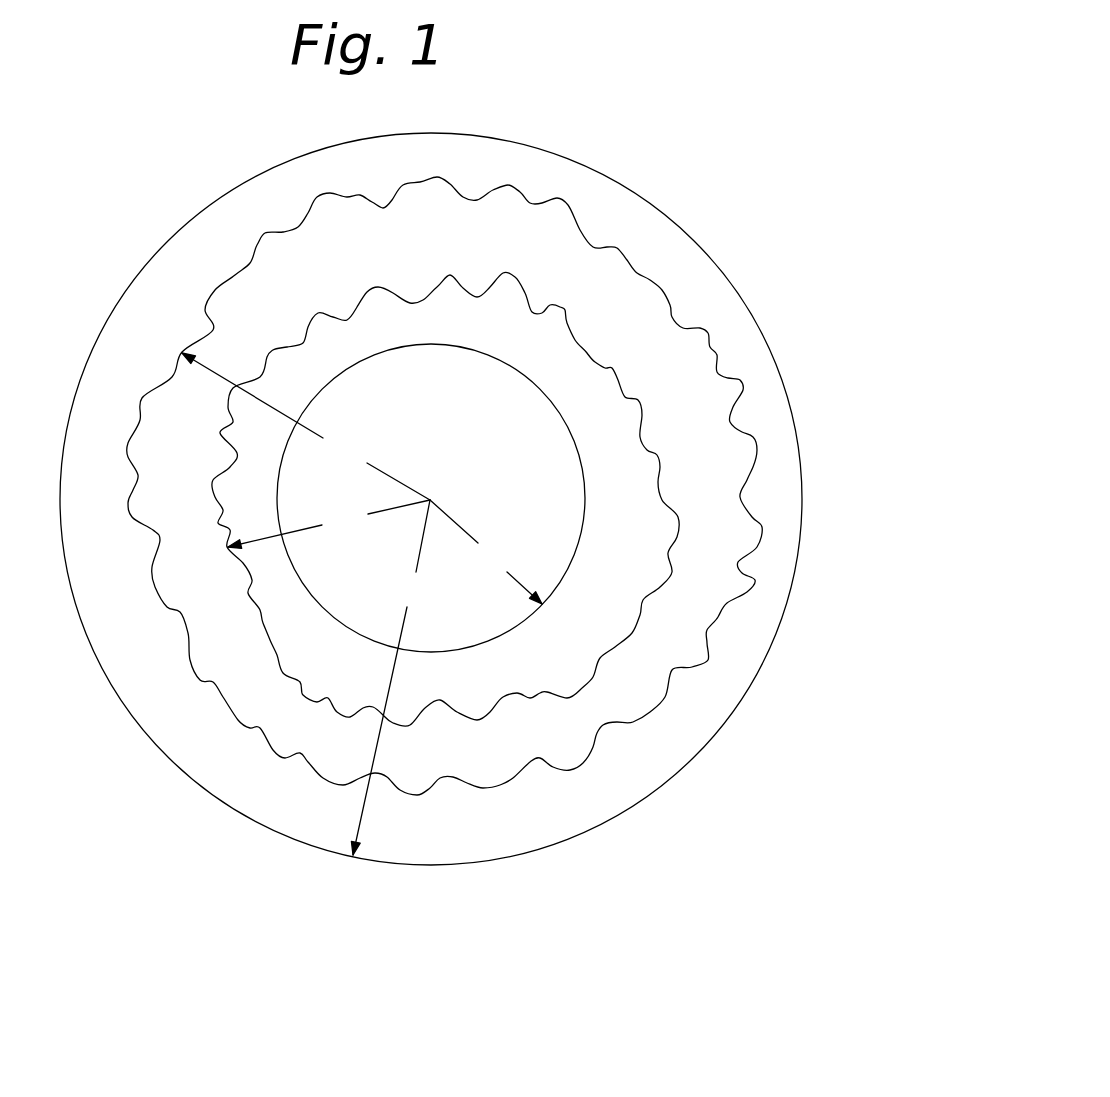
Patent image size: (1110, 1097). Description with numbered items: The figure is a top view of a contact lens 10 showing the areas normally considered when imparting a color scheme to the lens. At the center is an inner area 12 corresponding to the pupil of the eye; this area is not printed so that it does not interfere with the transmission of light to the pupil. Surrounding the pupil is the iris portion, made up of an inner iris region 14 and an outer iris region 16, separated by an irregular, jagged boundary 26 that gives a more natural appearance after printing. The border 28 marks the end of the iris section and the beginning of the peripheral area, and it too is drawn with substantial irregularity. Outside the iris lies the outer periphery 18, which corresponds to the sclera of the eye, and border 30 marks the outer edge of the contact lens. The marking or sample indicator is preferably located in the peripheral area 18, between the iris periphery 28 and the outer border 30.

The chewing gum product / layered confection 10 is at (671, 789).
The inner area 12 is at (478, 451).
The inner iris region 14 is at (561, 378).
The outer iris region 16 is at (499, 251).
The outer periphery 18 is at (408, 171).
The first irregular interface 26 is at (566, 305).
The border 28 is at (676, 281).
The border 30 is at (801, 419).